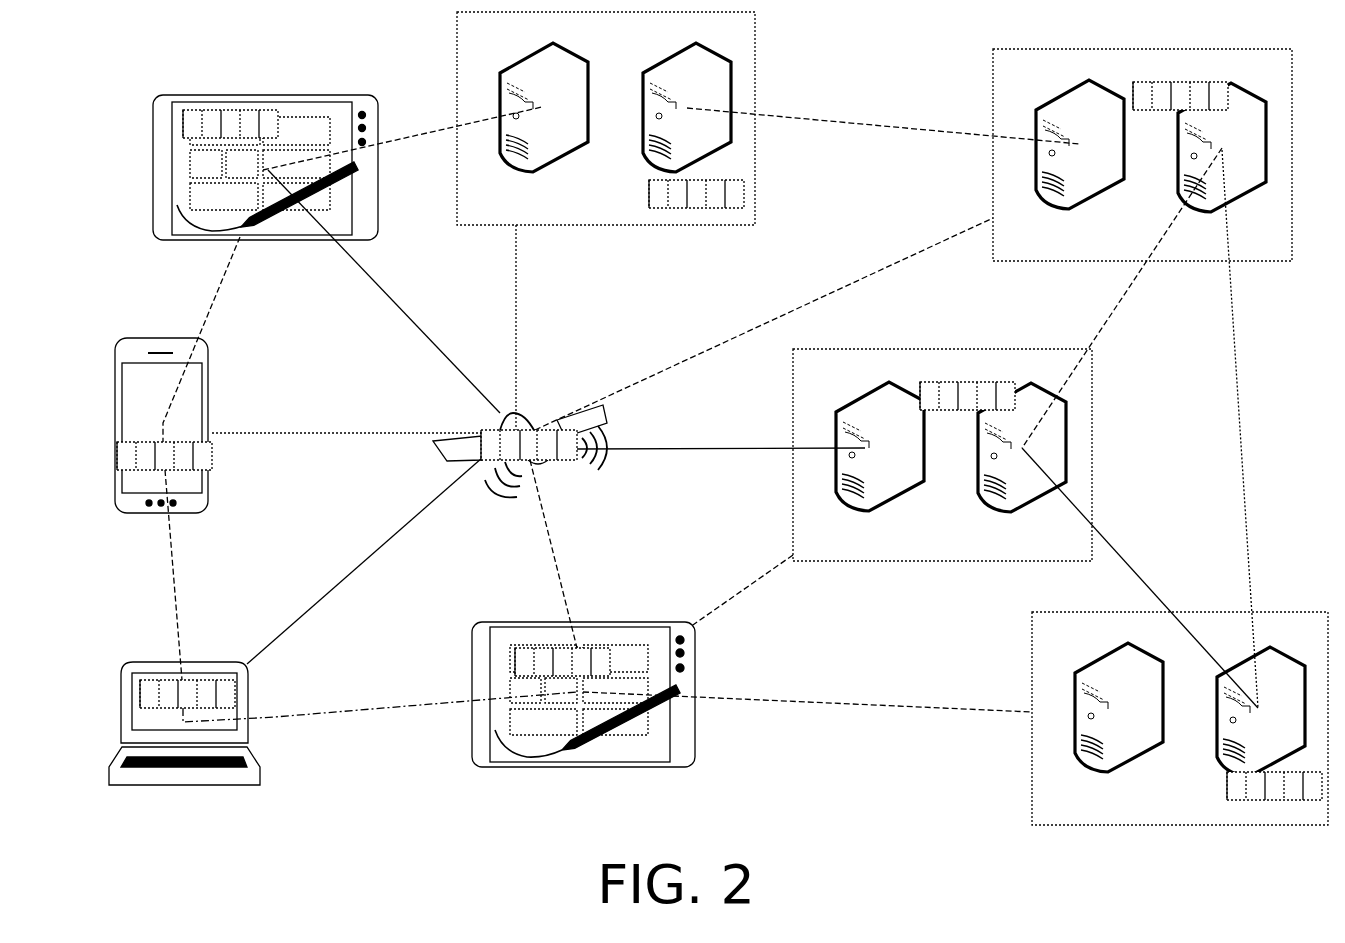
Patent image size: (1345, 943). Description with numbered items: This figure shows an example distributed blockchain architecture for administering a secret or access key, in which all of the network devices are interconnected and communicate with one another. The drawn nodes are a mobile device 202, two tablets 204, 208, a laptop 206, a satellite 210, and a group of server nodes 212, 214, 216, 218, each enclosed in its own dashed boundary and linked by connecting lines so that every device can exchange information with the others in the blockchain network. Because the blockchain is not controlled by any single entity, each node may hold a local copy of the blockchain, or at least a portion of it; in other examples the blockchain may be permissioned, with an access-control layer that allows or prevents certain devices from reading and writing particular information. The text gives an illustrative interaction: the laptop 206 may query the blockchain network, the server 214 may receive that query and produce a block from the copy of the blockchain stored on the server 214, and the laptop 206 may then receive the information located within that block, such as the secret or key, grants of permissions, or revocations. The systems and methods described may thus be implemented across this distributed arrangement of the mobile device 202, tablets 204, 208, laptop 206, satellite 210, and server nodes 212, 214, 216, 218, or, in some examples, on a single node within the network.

The mobile device 202 is at (126, 549).
The tablet 204 is at (284, 284).
The laptop 206 is at (166, 826).
The tablet 208 is at (565, 812).
The satellite 210 is at (562, 521).
The server node 212 is at (1163, 811).
The server 214 is at (925, 549).
The server node 216 is at (627, 211).
The server node 218 is at (1127, 249).